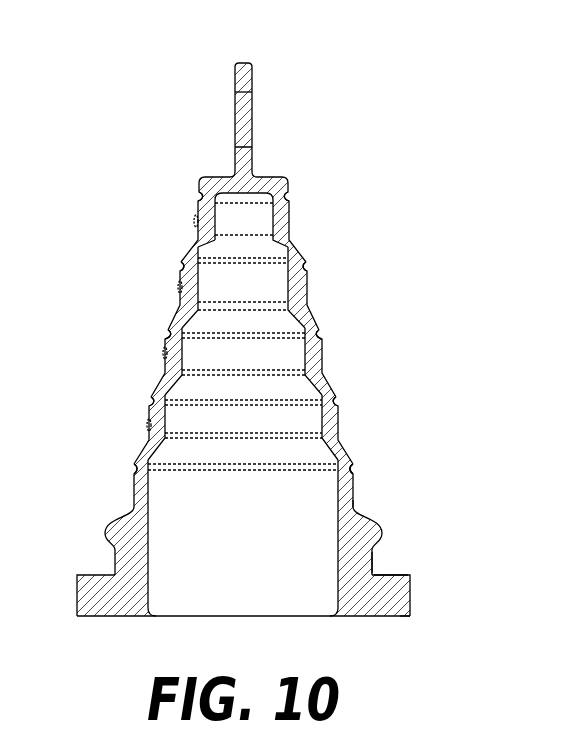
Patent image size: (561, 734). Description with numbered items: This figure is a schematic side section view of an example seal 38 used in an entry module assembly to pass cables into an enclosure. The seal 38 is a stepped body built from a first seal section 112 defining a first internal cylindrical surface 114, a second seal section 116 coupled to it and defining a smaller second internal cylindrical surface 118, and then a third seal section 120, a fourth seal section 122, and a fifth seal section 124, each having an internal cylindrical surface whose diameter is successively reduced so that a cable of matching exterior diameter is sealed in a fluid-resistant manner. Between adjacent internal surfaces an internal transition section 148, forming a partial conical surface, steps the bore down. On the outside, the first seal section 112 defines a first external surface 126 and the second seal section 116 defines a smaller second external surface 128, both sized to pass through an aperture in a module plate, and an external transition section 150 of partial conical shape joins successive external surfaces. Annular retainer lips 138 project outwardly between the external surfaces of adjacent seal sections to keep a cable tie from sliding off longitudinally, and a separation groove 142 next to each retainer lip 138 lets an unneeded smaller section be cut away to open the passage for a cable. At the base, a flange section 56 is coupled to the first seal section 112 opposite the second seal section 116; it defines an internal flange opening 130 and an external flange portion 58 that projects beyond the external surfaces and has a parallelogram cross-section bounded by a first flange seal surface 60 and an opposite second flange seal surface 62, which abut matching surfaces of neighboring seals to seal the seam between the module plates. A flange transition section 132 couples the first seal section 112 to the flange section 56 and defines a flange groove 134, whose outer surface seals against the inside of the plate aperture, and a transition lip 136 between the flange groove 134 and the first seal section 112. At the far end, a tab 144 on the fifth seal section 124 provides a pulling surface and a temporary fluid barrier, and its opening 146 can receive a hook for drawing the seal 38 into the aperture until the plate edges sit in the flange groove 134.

The seal 38 is at (345, 115).
The flange section 56 is at (416, 570).
The external flange portion 58 is at (412, 598).
The first flange seal surface 60 is at (75, 595).
The second flange seal surface 62 is at (412, 618).
The first seal section 112 is at (358, 498).
The first internal cylindrical surface 114 is at (163, 485).
The second seal section 116 is at (349, 423).
The second internal cylindrical surface 118 is at (190, 418).
The third seal section 120 is at (332, 355).
The fourth seal section 122 is at (314, 285).
The fifth seal section 124 is at (297, 217).
The first external surface 126 is at (378, 508).
The second external surface 128 is at (354, 463).
The internal flange opening 130 is at (220, 626).
The flange transition section 132 is at (407, 548).
The flange groove 134 is at (114, 557).
The transition lip 136 is at (387, 528).
The retainer lip 138 is at (293, 202).
The separation groove 142 is at (293, 196).
The tab 144 is at (248, 69).
The opening 146 is at (250, 108).
The internal transition section 148 is at (280, 250).
The external transition section 150 is at (193, 243).